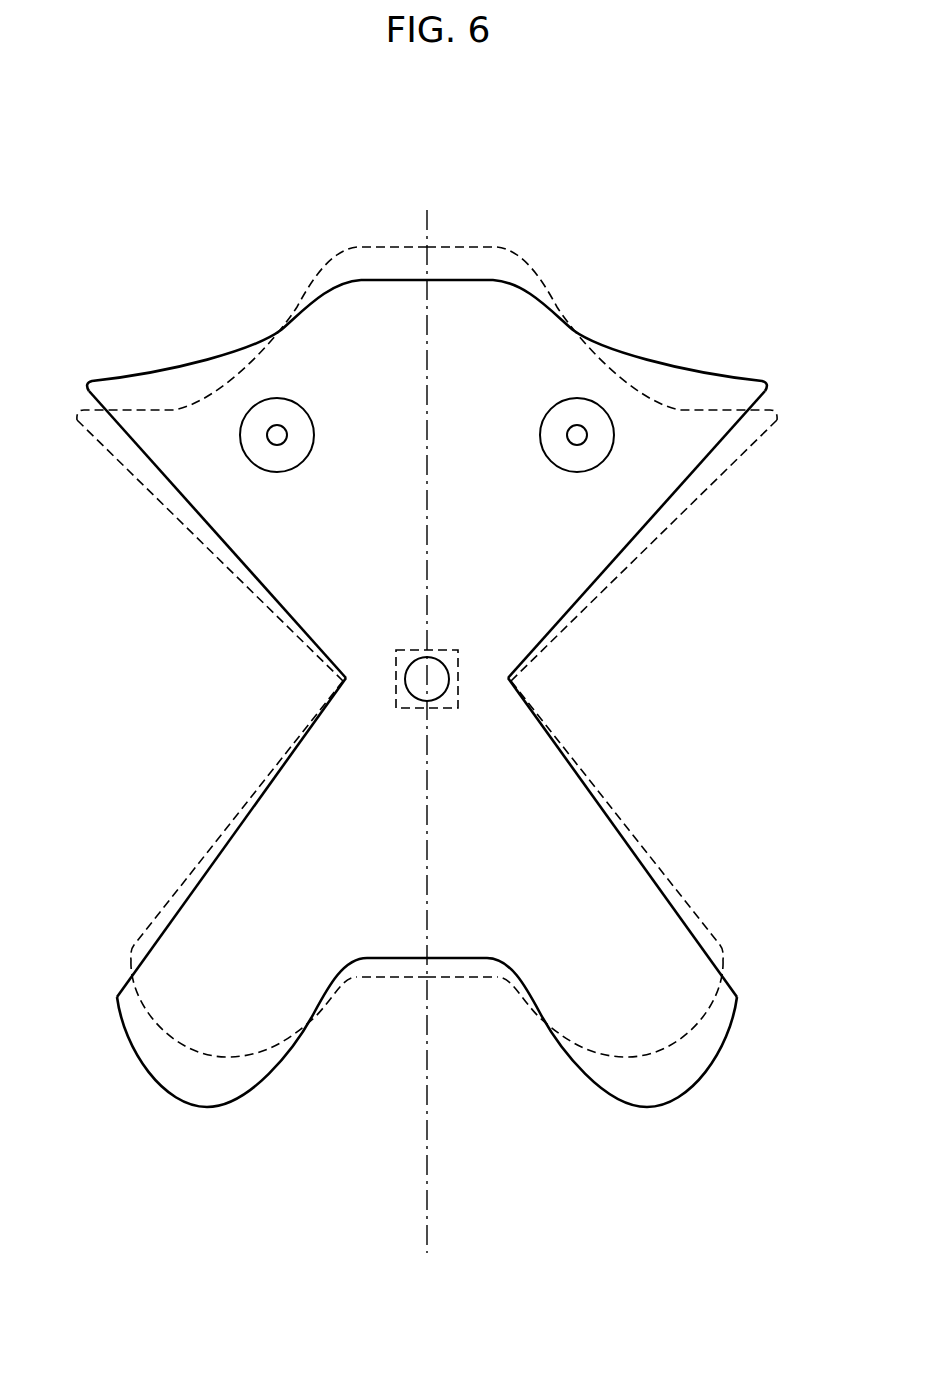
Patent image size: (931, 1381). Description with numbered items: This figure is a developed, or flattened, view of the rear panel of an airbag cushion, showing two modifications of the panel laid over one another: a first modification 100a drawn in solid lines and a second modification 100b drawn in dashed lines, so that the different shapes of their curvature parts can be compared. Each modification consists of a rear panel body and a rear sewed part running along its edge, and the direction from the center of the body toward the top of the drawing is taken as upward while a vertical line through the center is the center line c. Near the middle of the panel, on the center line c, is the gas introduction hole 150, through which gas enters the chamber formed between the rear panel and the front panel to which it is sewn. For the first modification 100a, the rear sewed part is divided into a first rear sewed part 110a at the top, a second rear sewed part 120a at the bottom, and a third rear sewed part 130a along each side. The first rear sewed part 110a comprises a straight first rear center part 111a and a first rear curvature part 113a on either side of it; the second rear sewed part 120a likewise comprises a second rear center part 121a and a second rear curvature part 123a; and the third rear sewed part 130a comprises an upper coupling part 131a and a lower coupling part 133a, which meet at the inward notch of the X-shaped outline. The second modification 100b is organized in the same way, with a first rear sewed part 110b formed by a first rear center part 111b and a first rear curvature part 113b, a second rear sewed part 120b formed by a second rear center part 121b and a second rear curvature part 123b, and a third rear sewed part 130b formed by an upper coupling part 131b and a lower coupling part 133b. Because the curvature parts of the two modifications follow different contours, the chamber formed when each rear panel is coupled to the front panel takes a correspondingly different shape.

The first modification of the rear panel 100a is at (652, 158).
The second modification of the rear panel 100b is at (213, 132).
The first rear sewed part 110a is at (513, 157).
The first rear sewed part 110b is at (347, 147).
The first rear center part 111a is at (471, 279).
The first rear center part 111b is at (382, 248).
The first rear curvature part 113a is at (193, 366).
The first rear curvature part 113b is at (232, 378).
The second rear sewed part 120a is at (386, 1144).
The second rear sewed part 120b is at (488, 1143).
The second rear center part 121a is at (397, 958).
The second rear center part 121b is at (462, 980).
The second rear curvature part 123a is at (240, 1103).
The second rear curvature part 123b is at (198, 1055).
The third rear sewed part 130a is at (725, 628).
The third rear sewed part 130b is at (147, 660).
The upper coupling part 131a is at (612, 570).
The upper coupling part 131b is at (245, 585).
The lower coupling part 133a is at (592, 793).
The lower coupling part 133b is at (243, 800).
The gas introduction hole 150 is at (448, 679).
The center line c is at (425, 1212).